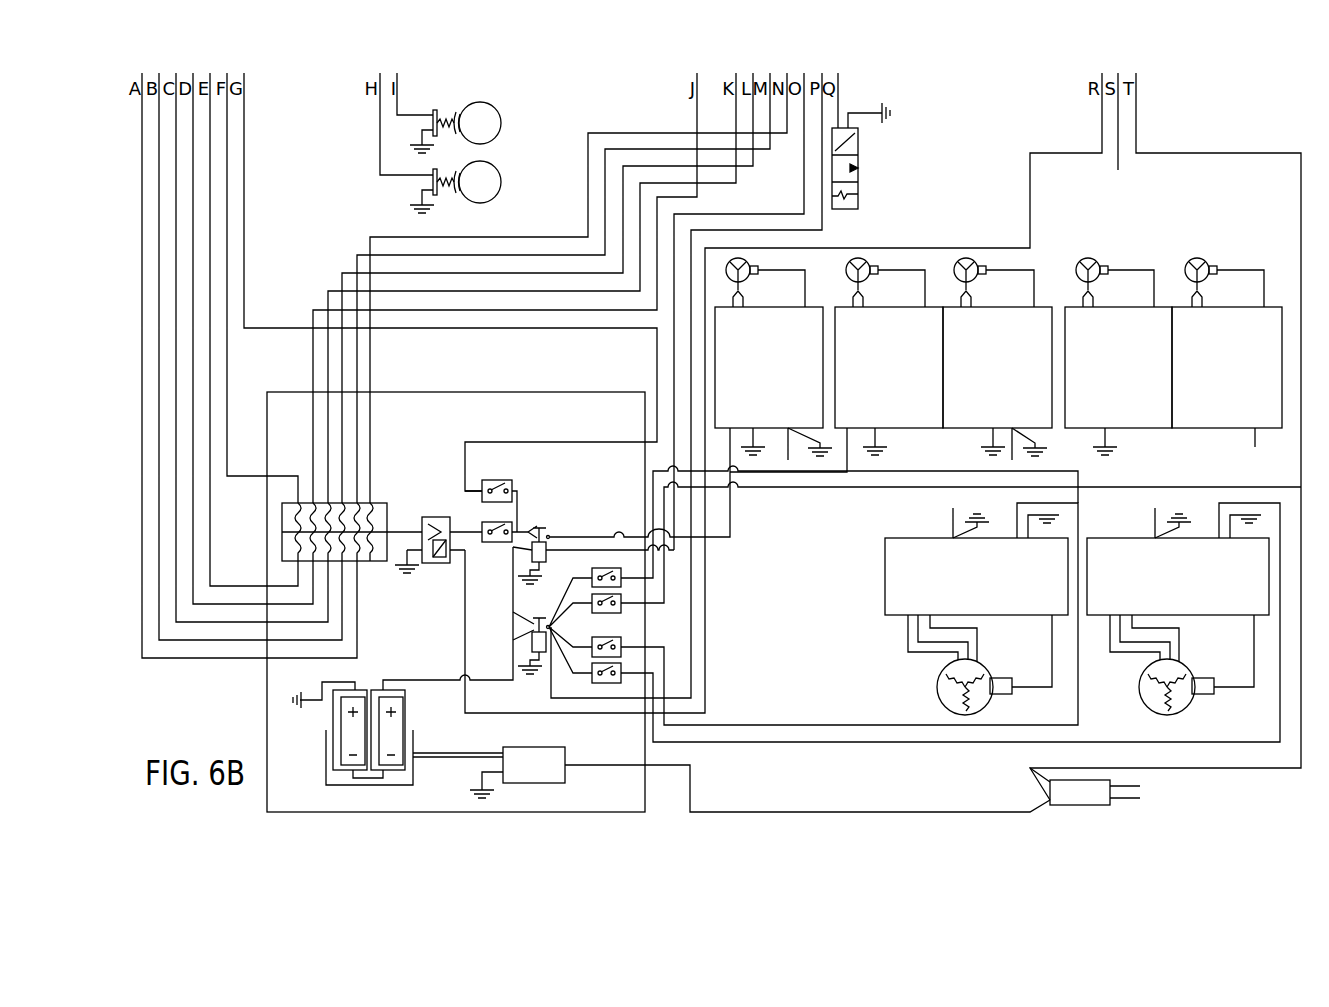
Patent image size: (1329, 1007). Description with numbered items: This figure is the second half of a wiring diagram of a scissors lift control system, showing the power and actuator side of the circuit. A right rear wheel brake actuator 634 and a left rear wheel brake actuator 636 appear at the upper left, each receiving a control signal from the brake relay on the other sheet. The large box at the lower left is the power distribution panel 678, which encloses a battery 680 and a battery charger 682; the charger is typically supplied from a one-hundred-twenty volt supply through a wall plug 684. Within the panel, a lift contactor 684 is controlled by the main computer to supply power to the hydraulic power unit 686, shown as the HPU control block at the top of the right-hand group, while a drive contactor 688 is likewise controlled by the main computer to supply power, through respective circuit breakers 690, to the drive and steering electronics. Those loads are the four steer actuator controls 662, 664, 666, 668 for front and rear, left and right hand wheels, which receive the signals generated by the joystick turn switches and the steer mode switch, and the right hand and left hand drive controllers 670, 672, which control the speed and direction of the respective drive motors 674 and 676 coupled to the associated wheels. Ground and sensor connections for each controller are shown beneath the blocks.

The right rear wheel brake actuator 634 is at (437, 108).
The left rear wheel brake actuator 636 is at (437, 198).
The power distribution panel 678 is at (490, 391).
The battery 680 is at (372, 682).
The battery charger 682 is at (760, 779).
The lift contactor 684 is at (550, 518).
The hydraulic power unit 686 is at (773, 359).
The steer actuator control 662 is at (889, 356).
The steer actuator control 664 is at (997, 359).
The steer actuator control 666 is at (1118, 356).
The steer actuator control 668 is at (1227, 352).
The right hand drive controller 670 is at (1178, 561).
The left hand drive controller 672 is at (976, 561).
The drive motor 674 is at (1192, 704).
The drive motor 676 is at (990, 704).
The drive contactor 688 is at (530, 614).
The circuit breakers 690 is at (600, 692).